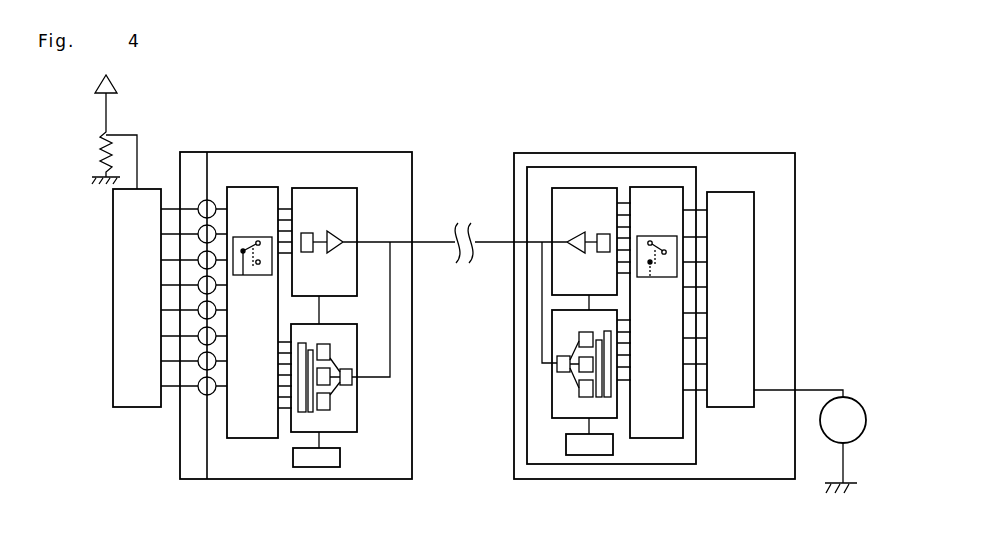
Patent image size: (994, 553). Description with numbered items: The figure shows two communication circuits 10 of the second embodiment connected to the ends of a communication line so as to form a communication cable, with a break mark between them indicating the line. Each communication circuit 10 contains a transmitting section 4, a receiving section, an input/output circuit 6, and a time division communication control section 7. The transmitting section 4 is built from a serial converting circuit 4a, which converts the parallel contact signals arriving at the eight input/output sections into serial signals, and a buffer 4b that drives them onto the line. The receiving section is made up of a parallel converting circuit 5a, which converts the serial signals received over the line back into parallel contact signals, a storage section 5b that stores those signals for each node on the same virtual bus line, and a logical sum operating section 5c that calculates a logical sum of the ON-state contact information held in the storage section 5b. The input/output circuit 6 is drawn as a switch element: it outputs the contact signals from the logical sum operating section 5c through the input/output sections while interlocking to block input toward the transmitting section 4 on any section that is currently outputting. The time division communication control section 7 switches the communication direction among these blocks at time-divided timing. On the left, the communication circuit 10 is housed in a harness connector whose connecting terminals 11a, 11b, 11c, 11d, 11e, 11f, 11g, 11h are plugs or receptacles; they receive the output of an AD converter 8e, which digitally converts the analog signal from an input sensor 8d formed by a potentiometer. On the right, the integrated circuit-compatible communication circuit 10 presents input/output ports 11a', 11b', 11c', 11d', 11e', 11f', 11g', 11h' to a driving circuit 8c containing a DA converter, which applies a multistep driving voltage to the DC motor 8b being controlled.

The transmitting section 4 is at (310, 190).
The serial converting circuit 4a is at (305, 233).
The buffer 4b is at (340, 240).
The parallel converting circuit 5a is at (352, 393).
The storage section 5b is at (318, 400).
The logical sum operating section 5c is at (293, 397).
The input/output circuit 6 is at (230, 425).
The time division communication control section 7 is at (328, 463).
The DC motor 8b is at (830, 440).
The driving circuit 8c is at (735, 192).
The input sensor 8d is at (103, 132).
The AD converter 8e is at (148, 189).
The communication circuit 10 is at (218, 152).
The connecting terminal 11a is at (143, 201).
The connecting terminal 11b is at (143, 226).
The connecting terminal 11c is at (143, 252).
The connecting terminal 11d is at (143, 277).
The connecting terminal 11e is at (143, 302).
The connecting terminal 11f is at (143, 328).
The connecting terminal 11g is at (143, 353).
The connecting terminal 11h is at (143, 378).
The input/output port 11a' is at (783, 199).
The input/output port 11b' is at (784, 226).
The input/output port 11c' is at (783, 251).
The input/output port 11d' is at (784, 276).
The input/output port 11e' is at (784, 302).
The input/output port 11f' is at (781, 327).
The input/output port 11g' is at (784, 353).
The input/output port 11h' is at (784, 379).